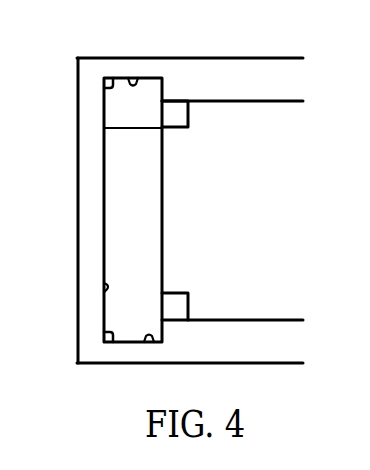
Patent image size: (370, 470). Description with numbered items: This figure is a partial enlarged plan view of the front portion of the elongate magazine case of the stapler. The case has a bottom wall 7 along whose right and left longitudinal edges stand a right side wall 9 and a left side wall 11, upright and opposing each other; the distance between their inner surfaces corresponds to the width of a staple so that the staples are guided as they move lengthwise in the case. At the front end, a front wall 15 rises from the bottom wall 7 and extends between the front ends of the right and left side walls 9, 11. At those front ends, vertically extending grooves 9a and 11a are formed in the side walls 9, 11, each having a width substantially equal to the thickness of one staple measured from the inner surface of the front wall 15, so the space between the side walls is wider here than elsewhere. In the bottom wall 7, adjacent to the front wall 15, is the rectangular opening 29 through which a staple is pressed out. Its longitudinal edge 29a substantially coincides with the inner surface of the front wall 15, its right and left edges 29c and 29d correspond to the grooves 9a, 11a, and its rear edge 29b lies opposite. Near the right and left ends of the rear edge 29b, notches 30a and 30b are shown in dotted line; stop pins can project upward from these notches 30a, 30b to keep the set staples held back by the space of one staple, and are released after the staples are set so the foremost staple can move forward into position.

The bottom wall 7 is at (262, 301).
The right side wall 9 is at (254, 352).
The groove 9a is at (150, 337).
The left side wall 11 is at (213, 68).
The groove 11a is at (133, 81).
The front wall 15 is at (86, 230).
The opening 29 is at (106, 185).
The longitudinal edge 29a is at (106, 291).
The rear edge 29b is at (104, 128).
The right edge 29c is at (104, 335).
The left edge 29d is at (112, 84).
The notch 30a is at (190, 306).
The notch 30b is at (190, 113).